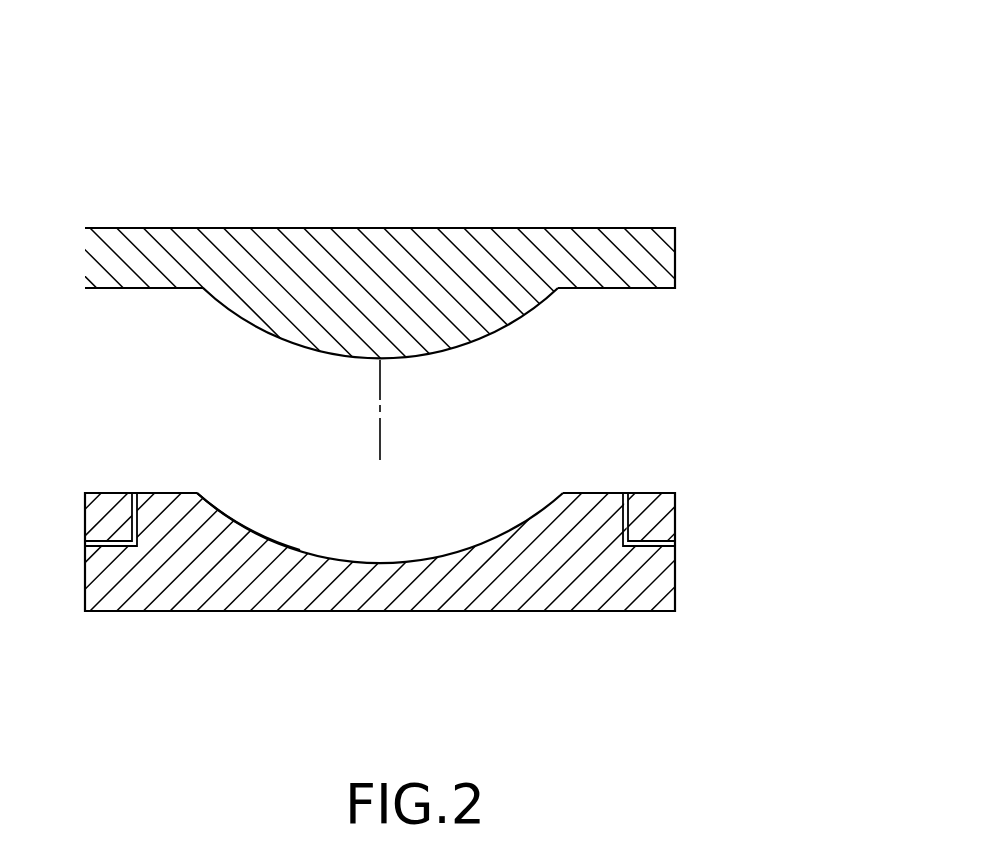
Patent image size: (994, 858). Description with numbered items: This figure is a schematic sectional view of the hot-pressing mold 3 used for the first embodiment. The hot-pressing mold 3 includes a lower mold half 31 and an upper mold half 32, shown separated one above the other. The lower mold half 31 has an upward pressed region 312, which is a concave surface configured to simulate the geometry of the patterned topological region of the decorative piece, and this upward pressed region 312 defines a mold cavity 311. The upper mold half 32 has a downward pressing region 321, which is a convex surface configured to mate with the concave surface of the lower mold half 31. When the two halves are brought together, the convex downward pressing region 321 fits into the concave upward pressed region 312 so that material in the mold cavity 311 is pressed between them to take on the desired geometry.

The hot-pressing mold 3 is at (387, 132).
The lower mold half 31 is at (502, 636).
The mold cavity 311 is at (485, 486).
The upward pressed region 312 is at (277, 543).
The upper mold half 32 is at (665, 257).
The downward pressing region 321 is at (518, 322).